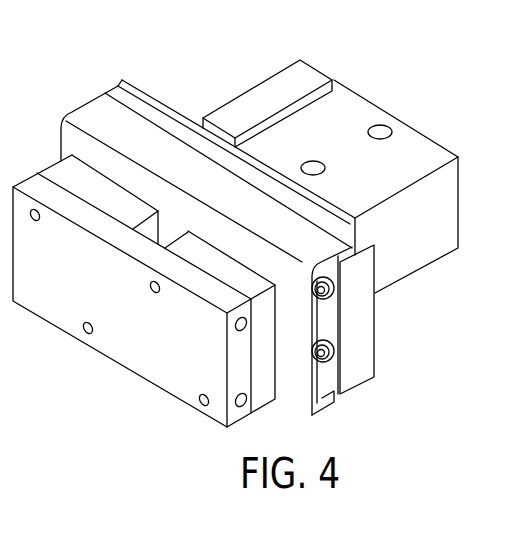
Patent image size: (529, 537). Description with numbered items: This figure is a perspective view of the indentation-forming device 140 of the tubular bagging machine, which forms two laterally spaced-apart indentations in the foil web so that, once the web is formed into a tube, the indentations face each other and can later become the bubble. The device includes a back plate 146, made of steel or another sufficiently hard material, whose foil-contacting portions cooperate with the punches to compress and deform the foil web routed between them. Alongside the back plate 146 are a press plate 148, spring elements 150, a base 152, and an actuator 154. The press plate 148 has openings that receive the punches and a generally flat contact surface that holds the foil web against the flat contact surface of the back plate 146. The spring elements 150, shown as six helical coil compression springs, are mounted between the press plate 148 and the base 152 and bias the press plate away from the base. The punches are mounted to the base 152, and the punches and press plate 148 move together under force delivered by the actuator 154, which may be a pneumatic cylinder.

The indentation-forming device 140 is at (393, 403).
The back plate 146 is at (157, 387).
The press plate 148 is at (287, 405).
The spring element 150 is at (334, 361).
The base 152 is at (378, 348).
The actuator 154 is at (237, 90).